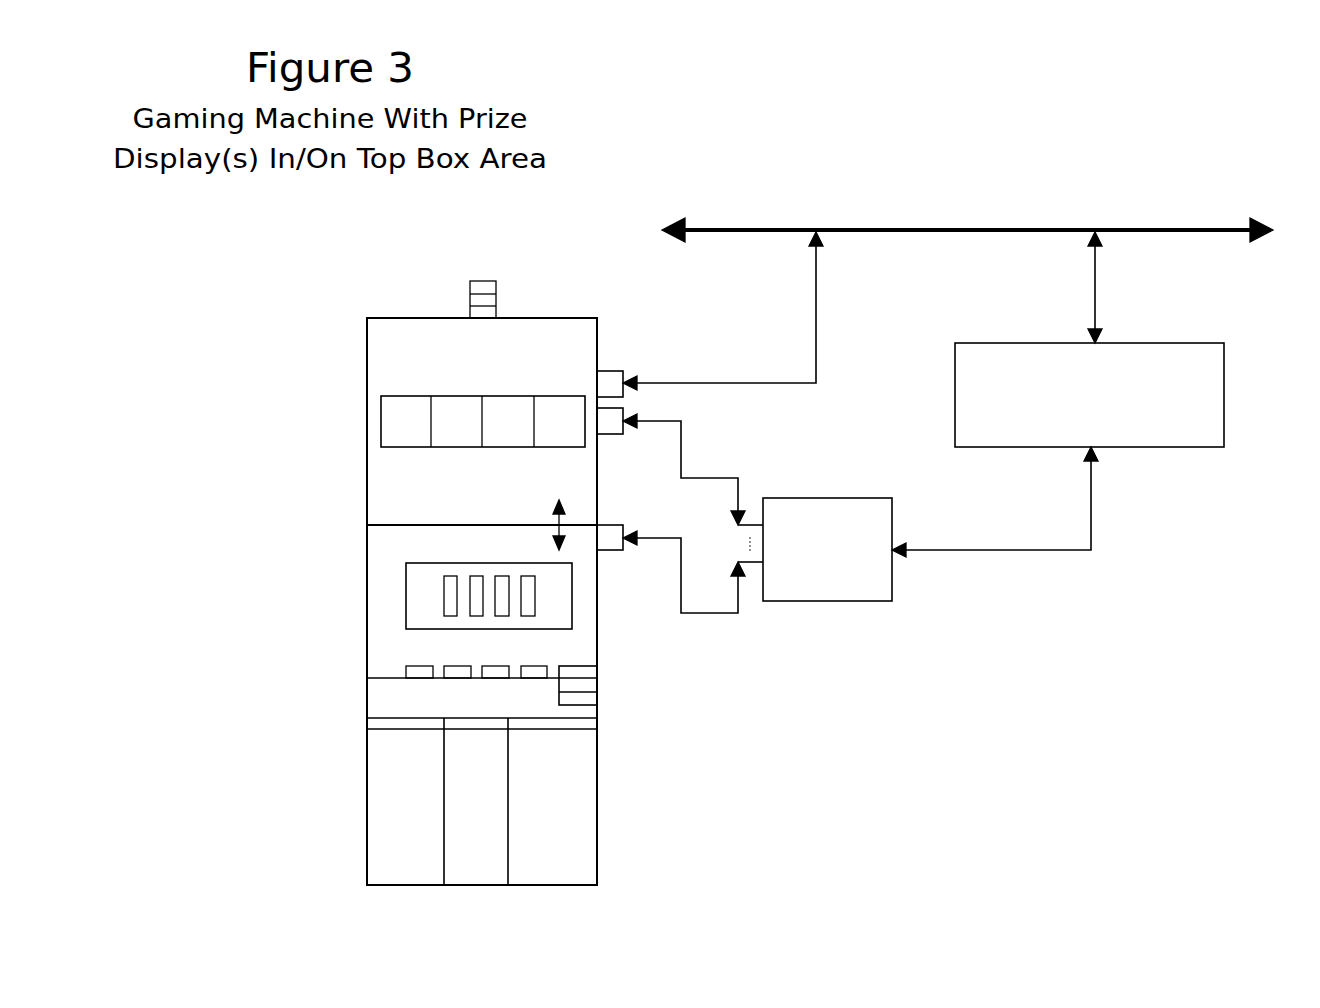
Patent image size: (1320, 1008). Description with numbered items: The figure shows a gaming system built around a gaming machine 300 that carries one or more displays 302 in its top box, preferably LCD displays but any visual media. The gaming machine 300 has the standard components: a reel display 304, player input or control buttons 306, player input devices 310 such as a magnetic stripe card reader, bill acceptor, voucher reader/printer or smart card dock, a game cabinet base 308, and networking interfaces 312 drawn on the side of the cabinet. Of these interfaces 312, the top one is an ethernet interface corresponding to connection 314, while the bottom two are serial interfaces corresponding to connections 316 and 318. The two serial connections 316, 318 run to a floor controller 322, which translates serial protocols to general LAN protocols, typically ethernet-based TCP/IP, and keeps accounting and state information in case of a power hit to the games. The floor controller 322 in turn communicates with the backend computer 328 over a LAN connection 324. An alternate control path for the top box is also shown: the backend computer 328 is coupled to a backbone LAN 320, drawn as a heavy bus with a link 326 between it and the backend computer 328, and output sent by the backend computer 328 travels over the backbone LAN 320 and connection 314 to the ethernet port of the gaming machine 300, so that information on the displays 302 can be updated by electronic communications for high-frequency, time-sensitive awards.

The gaming machine 300 is at (360, 480).
The displays 302 is at (398, 422).
The reel display 304 is at (427, 604).
The player input or control buttons 306 is at (406, 666).
The game cabinet base 308 is at (398, 818).
The player input devices 310 is at (580, 683).
The networking interfaces 312 is at (612, 368).
The connection 314 is at (745, 383).
The connection 316 is at (730, 478).
The connection 318 is at (707, 616).
The backbone LAN 320 is at (963, 222).
The floor controller 322 is at (870, 601).
The LAN connection 324 is at (1091, 520).
The bidirectional link to network bus 326 is at (1100, 300).
The backend computer 328 is at (1224, 422).